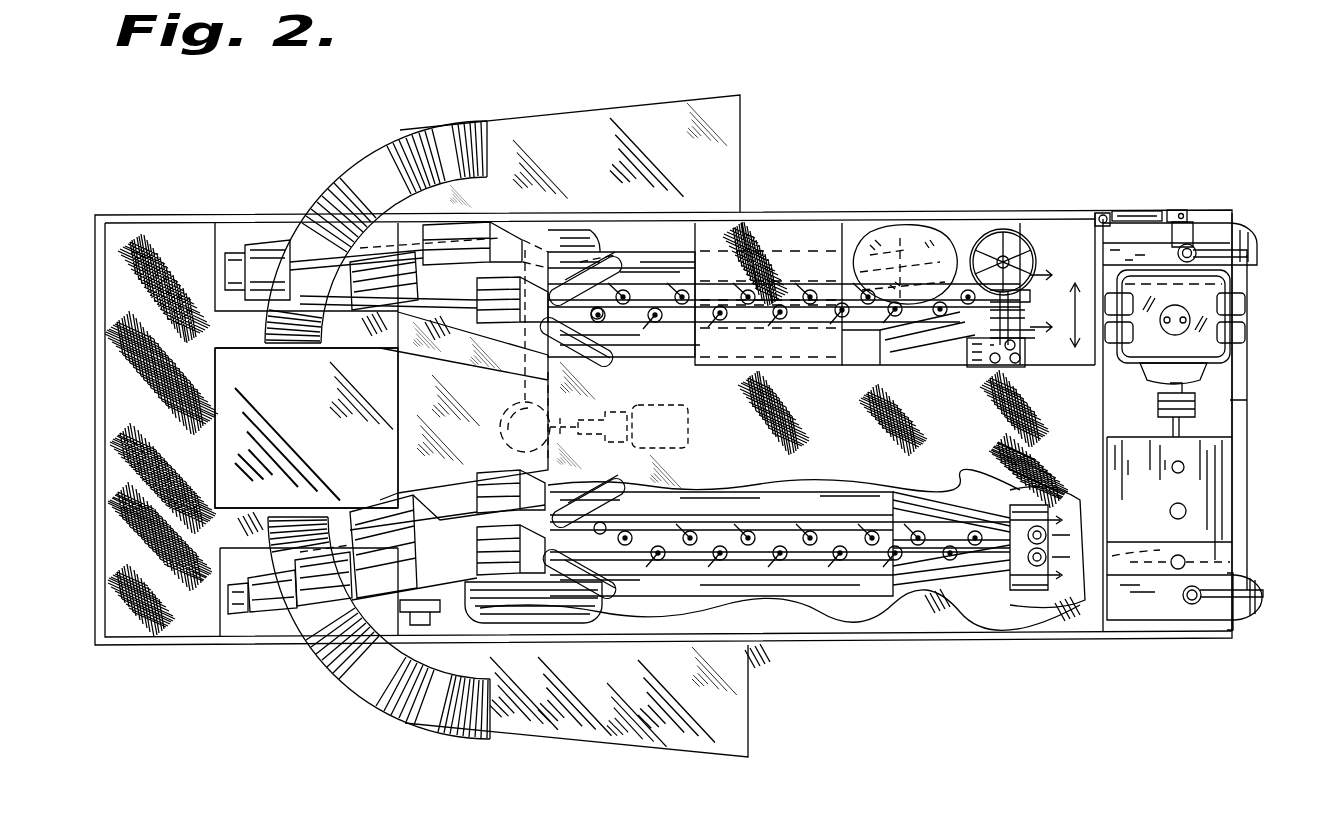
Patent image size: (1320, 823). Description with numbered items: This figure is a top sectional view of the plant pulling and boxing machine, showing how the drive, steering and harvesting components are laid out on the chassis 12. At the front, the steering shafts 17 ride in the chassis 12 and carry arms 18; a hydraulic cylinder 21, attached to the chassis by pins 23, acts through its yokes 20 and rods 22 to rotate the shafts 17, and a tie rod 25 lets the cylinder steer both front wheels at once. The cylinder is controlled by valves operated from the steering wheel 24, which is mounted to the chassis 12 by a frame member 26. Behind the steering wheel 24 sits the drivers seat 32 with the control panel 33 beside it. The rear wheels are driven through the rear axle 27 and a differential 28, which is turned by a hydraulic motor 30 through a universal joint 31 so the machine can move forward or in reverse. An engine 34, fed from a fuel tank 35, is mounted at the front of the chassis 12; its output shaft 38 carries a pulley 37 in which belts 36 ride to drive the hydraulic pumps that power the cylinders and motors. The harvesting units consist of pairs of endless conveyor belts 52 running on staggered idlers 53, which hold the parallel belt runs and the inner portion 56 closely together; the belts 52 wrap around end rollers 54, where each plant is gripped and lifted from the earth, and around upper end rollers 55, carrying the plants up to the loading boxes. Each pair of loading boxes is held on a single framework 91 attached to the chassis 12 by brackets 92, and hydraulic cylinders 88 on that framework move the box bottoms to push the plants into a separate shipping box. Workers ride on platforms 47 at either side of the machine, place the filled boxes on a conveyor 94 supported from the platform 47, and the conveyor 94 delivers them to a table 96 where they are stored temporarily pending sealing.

The chassis 12 is at (128, 640).
The steering shaft 17 is at (1153, 250).
The arm 18 is at (1197, 235).
The yoke 20 is at (1190, 210).
The hydraulic cylinder 21 is at (1120, 210).
The rod 22 is at (1165, 209).
The pin 23 is at (1095, 212).
The steering wheel 24 is at (1000, 230).
The tie rod 25 is at (1248, 512).
The frame member 26 is at (1038, 240).
The rear axle 27 is at (512, 386).
The differential 28 is at (512, 440).
The hydraulic motor 30 is at (680, 402).
The universal joint 31 is at (628, 402).
The drivers seat 32 is at (905, 230).
The control panel 33 is at (1026, 354).
The engine 34 is at (1220, 356).
The fuel tank 35 is at (1228, 562).
The belts 36 is at (1200, 406).
The pulley 37 is at (1198, 420).
The output shaft 38 is at (1215, 385).
The platform 47 is at (690, 745).
The endless conveyor belt 52 is at (972, 577).
The staggered idler 53 is at (905, 555).
The end roller 54 is at (1038, 580).
The upper end roller 55 is at (563, 590).
The inner portion 56 is at (862, 545).
The hydraulic cylinder 88 is at (270, 612).
The framework 91 is at (283, 610).
The bracket 92 is at (235, 617).
The conveyor 94 is at (383, 677).
The table 96 is at (306, 428).